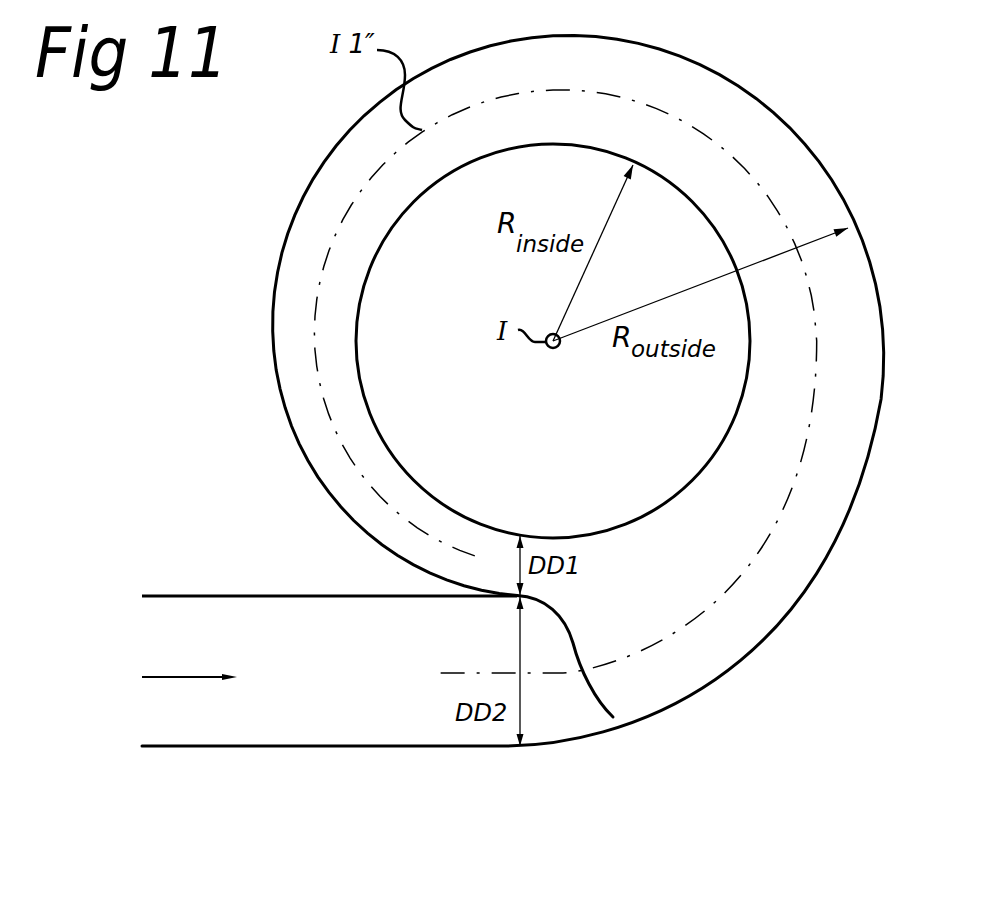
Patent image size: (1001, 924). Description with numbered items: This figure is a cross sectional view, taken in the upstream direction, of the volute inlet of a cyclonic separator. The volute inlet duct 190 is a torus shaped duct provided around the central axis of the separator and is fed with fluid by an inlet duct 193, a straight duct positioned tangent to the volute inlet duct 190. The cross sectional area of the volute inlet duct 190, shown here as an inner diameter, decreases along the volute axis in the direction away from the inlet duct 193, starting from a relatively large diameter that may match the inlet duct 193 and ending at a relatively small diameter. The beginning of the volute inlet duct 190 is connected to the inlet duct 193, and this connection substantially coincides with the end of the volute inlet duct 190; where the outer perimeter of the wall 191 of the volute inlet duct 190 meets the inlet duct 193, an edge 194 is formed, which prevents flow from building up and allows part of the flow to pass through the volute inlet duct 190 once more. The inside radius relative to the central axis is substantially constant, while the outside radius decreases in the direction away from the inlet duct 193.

The volute inlet duct 190 is at (303, 285).
The wall 191 is at (310, 183).
The inlet duct 193 is at (292, 683).
The edge 194 is at (613, 717).